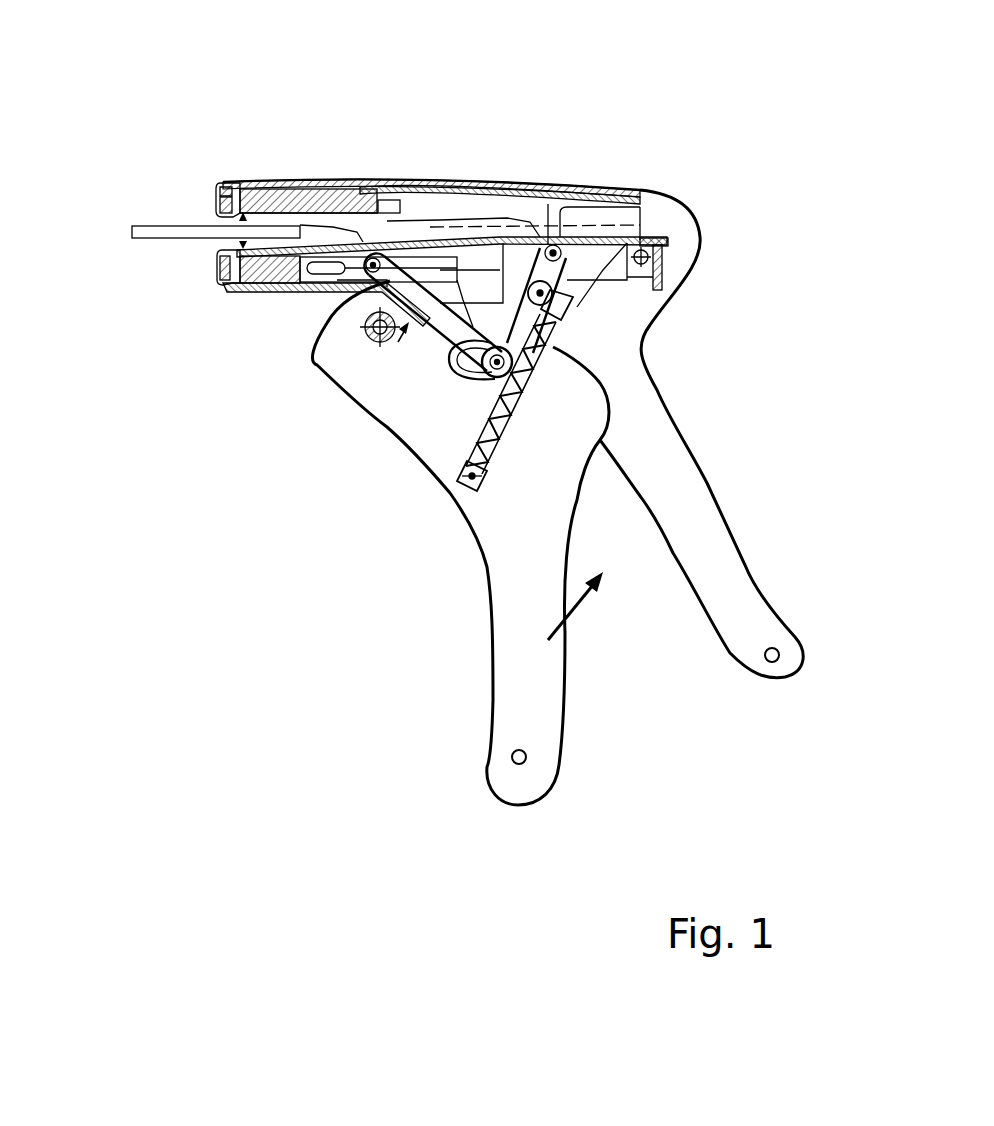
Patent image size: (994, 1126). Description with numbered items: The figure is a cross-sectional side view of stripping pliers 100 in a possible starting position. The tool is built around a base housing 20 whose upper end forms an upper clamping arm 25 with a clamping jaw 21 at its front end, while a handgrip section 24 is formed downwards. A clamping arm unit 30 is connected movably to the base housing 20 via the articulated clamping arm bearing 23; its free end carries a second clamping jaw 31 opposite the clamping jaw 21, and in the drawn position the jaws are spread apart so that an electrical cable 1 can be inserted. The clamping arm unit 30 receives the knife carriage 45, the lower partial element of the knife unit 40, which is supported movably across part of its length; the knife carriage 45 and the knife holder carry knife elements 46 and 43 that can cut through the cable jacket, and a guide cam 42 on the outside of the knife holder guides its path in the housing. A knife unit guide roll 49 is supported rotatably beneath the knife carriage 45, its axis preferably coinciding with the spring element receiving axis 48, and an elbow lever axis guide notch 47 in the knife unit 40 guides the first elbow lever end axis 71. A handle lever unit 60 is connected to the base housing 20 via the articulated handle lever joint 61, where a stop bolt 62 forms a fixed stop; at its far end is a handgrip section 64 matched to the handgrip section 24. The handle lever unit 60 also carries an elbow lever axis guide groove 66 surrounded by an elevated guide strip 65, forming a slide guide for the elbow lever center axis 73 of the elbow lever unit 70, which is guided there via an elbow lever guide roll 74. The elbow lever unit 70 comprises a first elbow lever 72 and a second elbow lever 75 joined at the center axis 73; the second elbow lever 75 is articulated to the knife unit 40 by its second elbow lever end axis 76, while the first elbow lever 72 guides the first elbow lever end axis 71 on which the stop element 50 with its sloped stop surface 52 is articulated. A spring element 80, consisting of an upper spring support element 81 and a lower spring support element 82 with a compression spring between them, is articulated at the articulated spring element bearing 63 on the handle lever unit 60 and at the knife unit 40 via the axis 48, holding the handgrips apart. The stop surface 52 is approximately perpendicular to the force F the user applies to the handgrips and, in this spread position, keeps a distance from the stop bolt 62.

The stripping pliers 100 is at (116, 90).
The electrical cable 1 is at (133, 226).
The base housing 20 is at (698, 200).
The clamping jaw 21 is at (217, 212).
The articulated clamping arm bearing 23 is at (663, 252).
The handgrip section 24 is at (750, 624).
The upper clamping arm 25 is at (223, 181).
The clamping arm unit 30 is at (307, 291).
The clamping jaw 31 is at (217, 258).
The knife unit 40 is at (412, 190).
The guide cam 42 is at (255, 190).
The knife element 43 is at (232, 181).
The knife carriage 45 is at (474, 190).
The knife element 46 is at (333, 298).
The elbow lever axis guide notch 47 is at (310, 262).
The spring element receiving axis 48 is at (600, 311).
The knife unit guide roll 49 is at (627, 183).
The stop element 50 is at (362, 319).
The stop surface 52 is at (467, 337).
The handle lever unit 60 is at (510, 713).
The articulated handle lever joint 61 is at (360, 342).
The stop bolt 62 is at (400, 336).
The articulated spring element bearing 63 is at (483, 477).
The handgrip section 64 is at (508, 639).
The elevated guide strip 65 is at (478, 380).
The elbow lever axis guide groove 66 is at (473, 373).
The elbow lever unit 70 is at (480, 290).
The first elbow lever end axis 71 is at (371, 253).
The first elbow lever 72 is at (444, 190).
The elbow lever center axis 73 is at (560, 340).
The elbow lever guide roll 74 is at (480, 375).
The second elbow lever 75 is at (521, 190).
The second elbow lever end axis 76 is at (568, 237).
The spring element 80 is at (512, 405).
The upper spring support element 81 is at (575, 308).
The lower spring support element 82 is at (487, 470).
The force F is at (597, 597).